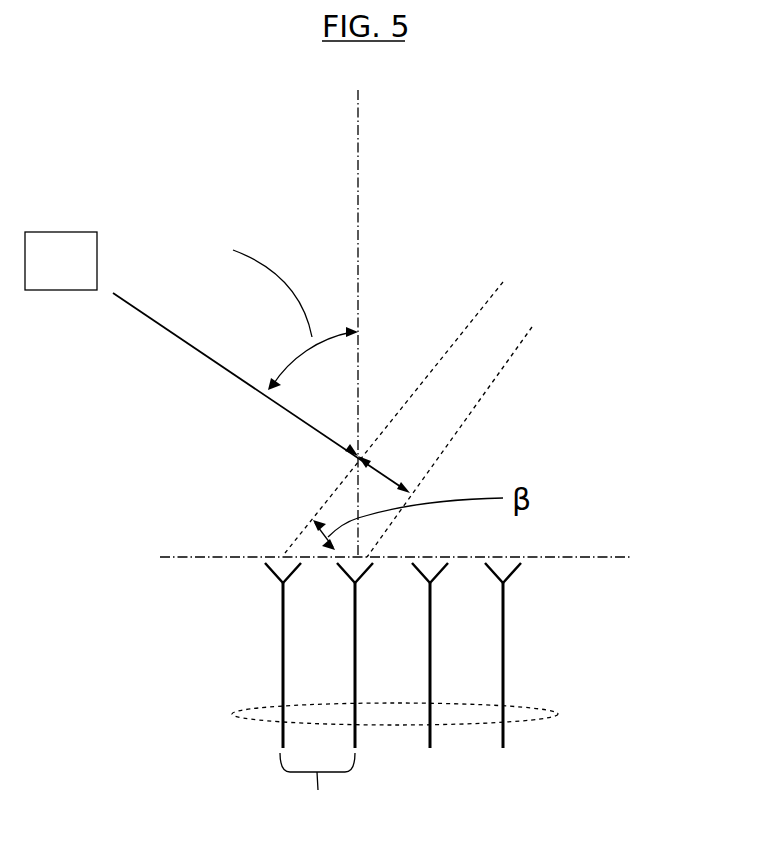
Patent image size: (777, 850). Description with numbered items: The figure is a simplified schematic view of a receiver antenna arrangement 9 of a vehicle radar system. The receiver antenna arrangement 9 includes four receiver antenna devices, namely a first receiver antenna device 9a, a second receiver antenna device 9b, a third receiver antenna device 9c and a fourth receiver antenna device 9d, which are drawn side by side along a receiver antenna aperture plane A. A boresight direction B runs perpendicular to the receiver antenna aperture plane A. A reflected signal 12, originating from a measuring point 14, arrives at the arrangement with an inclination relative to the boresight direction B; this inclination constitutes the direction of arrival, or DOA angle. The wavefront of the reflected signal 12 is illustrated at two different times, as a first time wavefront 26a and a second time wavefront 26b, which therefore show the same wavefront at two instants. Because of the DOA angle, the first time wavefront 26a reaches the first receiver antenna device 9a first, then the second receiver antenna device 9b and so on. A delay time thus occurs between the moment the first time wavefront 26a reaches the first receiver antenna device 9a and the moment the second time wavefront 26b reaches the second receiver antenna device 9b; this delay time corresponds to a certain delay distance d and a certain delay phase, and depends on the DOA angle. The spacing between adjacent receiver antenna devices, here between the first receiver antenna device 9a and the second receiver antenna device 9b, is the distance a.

The reflected signal 12 is at (170, 335).
The measuring point 14 is at (79, 283).
The first time wavefront 26a is at (410, 400).
The second time wavefront 26b is at (477, 403).
The receiver antenna arrangement 9 is at (547, 727).
The first receiver antenna device 9a is at (278, 662).
The second receiver antenna device 9b is at (355, 637).
The third receiver antenna device 9c is at (430, 663).
The fourth receiver antenna device 9d is at (503, 687).
The receiver antenna aperture plane A is at (213, 563).
The boresight direction B is at (358, 177).
The delay distance d is at (388, 470).
The distance between adjacent receiver antenna devices a is at (317, 791).